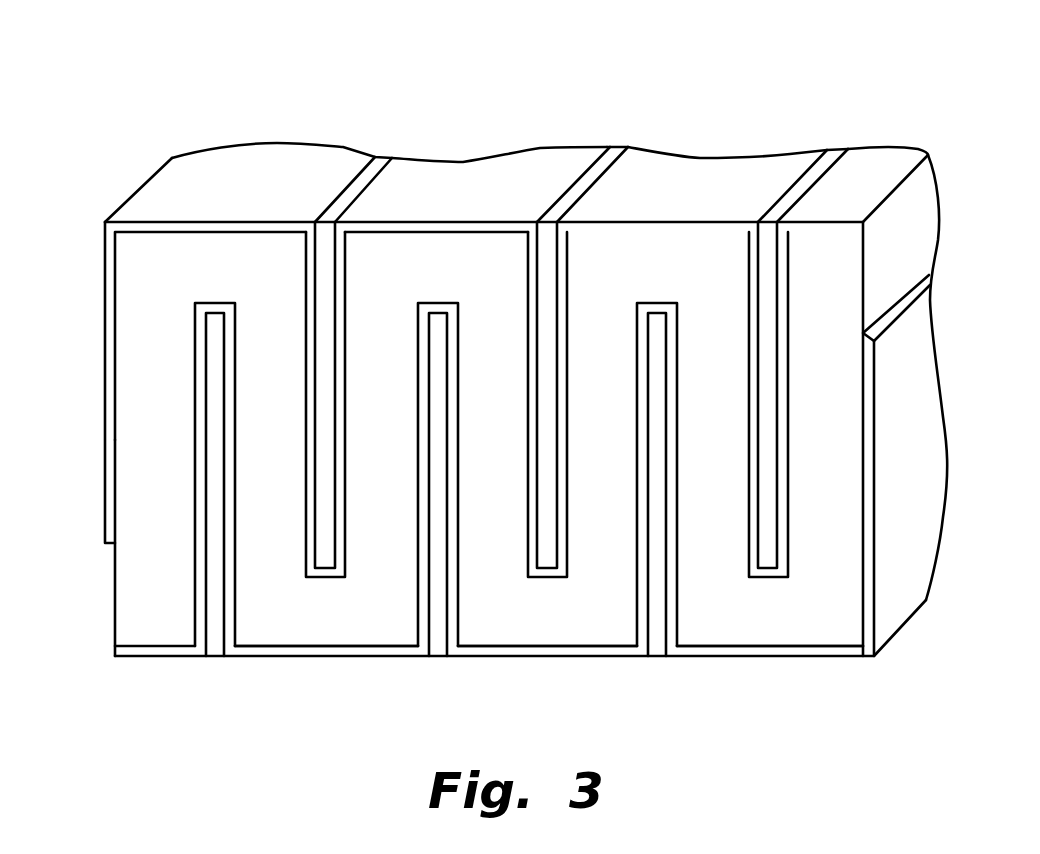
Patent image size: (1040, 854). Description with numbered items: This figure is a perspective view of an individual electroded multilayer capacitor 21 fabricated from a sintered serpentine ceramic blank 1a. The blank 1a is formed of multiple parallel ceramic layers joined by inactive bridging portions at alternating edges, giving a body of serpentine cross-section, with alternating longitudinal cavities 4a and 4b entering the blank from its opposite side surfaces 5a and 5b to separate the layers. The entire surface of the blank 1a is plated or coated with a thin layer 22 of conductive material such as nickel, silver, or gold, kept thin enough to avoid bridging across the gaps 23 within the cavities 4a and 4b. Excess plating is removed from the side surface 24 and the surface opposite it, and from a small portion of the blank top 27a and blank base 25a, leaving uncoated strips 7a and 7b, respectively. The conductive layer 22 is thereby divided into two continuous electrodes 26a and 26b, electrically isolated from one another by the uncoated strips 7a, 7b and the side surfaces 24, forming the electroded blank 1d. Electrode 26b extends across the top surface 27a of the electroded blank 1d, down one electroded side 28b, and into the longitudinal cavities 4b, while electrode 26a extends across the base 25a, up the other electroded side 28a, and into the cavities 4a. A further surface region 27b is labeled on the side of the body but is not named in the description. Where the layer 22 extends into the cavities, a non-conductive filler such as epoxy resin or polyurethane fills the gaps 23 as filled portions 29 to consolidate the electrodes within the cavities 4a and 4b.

The electroded capacitor 21 is at (928, 127).
The sintered barium titanate blank 1a is at (848, 593).
The electroded blank 1d is at (913, 330).
The uncoated strip 7a is at (920, 202).
The uncoated strip 7b is at (115, 582).
The longitudinal cavity 4a is at (343, 253).
The longitudinal cavity 4b is at (458, 608).
The side surface 5a is at (438, 225).
The side surface 5b is at (548, 650).
The conductive layer 22 is at (165, 190).
The gap 23 is at (213, 347).
The side surface 24 is at (128, 274).
The blank base 25a is at (107, 360).
The electrode 26a is at (265, 162).
The electrode 26b is at (773, 650).
The blank top 27a is at (873, 528).
The upper side portion 27b is at (910, 368).
The electroded side 28a is at (693, 183).
The electroded side 28b is at (362, 650).
The filled portion 29 is at (343, 148).